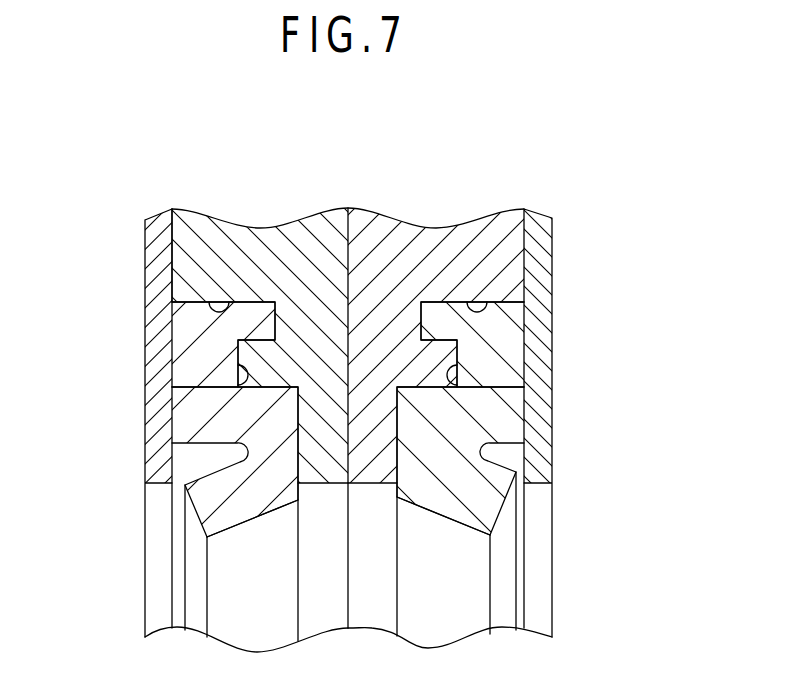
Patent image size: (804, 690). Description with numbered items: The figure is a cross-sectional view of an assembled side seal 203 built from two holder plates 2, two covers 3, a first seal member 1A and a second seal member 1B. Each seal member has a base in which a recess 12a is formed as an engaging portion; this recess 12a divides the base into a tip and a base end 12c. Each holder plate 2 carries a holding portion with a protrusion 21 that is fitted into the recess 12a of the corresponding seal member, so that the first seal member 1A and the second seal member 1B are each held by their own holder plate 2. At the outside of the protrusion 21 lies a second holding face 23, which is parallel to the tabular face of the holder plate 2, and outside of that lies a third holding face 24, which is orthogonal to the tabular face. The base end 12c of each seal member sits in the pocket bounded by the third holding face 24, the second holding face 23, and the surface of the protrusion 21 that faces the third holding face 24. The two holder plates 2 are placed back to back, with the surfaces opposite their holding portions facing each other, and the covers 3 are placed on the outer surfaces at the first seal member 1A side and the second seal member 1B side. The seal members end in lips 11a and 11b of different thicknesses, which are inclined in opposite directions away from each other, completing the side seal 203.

The side seal 203 is at (578, 193).
The holder plate 2 is at (270, 228).
The cover 3 is at (146, 243).
The base end 12c is at (205, 313).
The second holding face 23 is at (241, 320).
The third holding face 24 is at (213, 307).
The protrusion 21 is at (247, 357).
The recess 12a is at (245, 385).
The first seal member 1A is at (184, 528).
The second seal member 1B is at (516, 528).
The lip 11a is at (242, 512).
The lip 11b is at (454, 512).